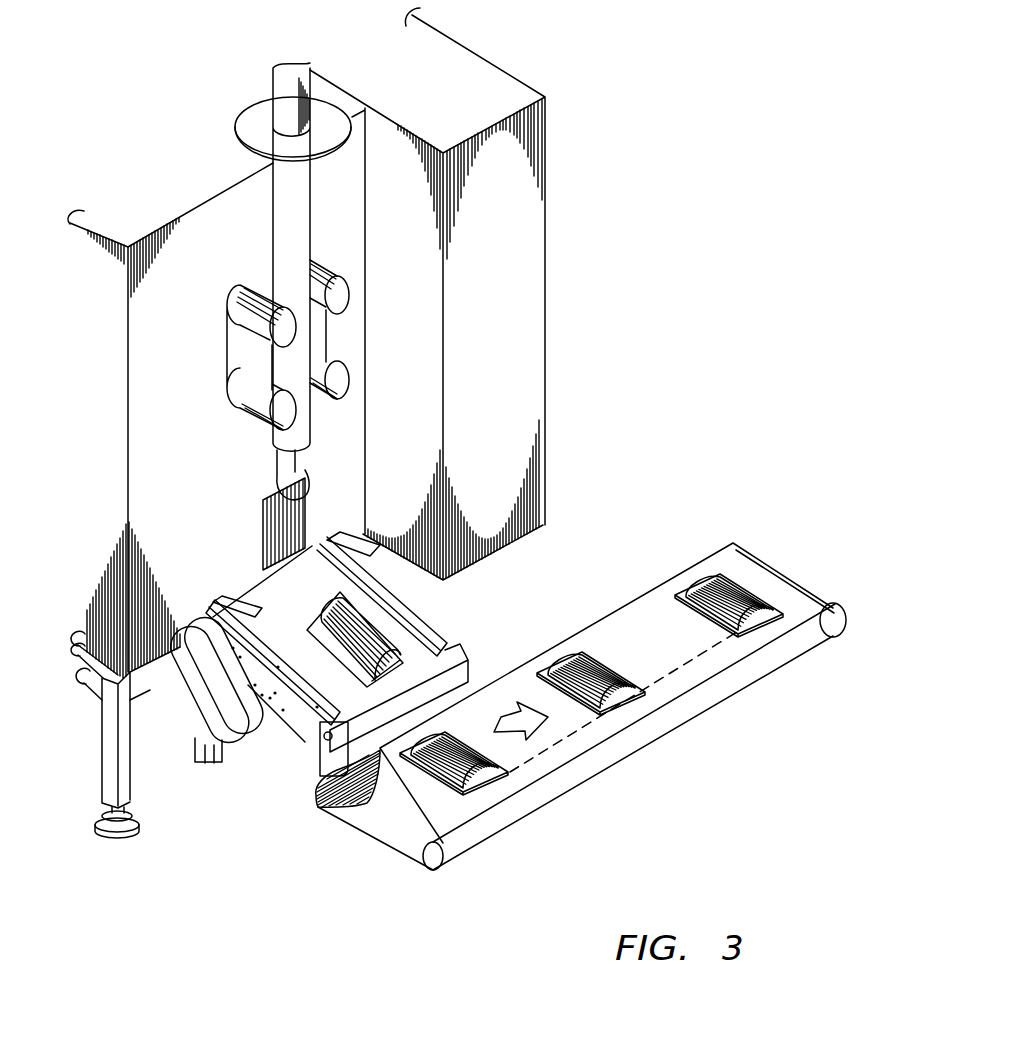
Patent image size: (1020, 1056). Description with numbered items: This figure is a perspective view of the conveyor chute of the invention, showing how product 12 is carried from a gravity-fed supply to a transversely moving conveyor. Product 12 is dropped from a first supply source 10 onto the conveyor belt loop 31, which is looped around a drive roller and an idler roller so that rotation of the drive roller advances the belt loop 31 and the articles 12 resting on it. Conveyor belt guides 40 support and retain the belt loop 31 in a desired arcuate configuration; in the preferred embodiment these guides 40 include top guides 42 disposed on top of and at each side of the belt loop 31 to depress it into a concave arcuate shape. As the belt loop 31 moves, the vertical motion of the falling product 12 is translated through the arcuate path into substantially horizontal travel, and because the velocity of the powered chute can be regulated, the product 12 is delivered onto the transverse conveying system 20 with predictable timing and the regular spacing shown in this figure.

The first supply source 10 is at (155, 395).
The product 12 is at (280, 524).
The transverse conveying system 20 is at (357, 852).
The conveyor belt loop 31 is at (450, 652).
The conveyor belt guides 40 is at (327, 556).
The top guides 42 is at (417, 627).